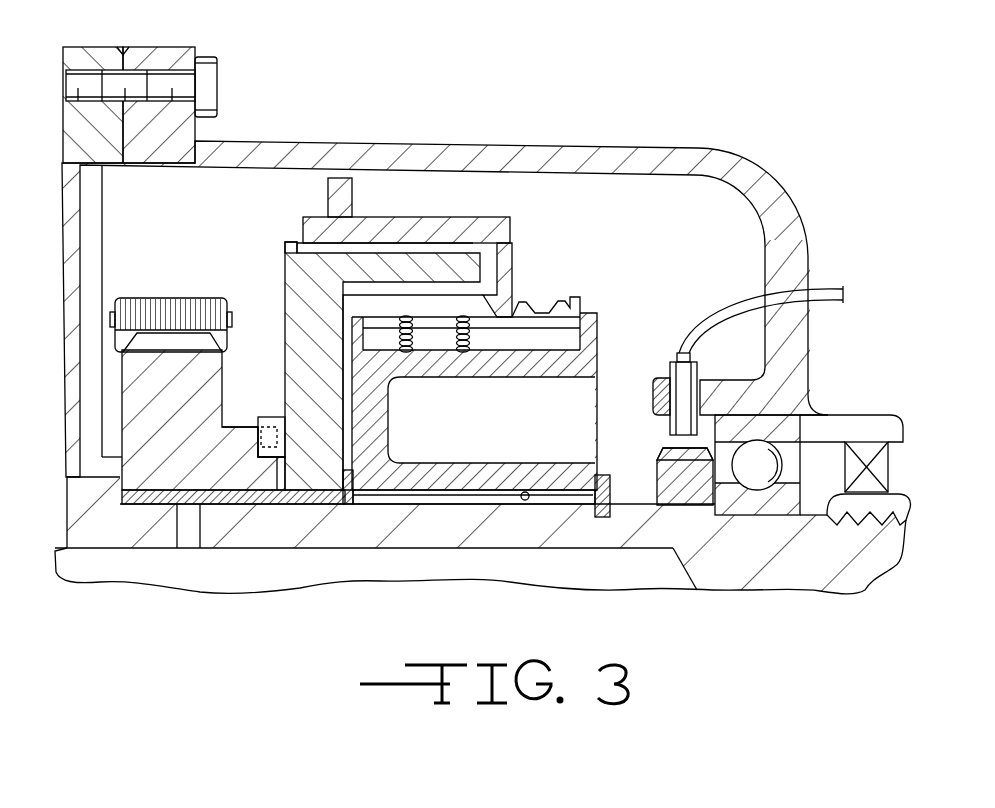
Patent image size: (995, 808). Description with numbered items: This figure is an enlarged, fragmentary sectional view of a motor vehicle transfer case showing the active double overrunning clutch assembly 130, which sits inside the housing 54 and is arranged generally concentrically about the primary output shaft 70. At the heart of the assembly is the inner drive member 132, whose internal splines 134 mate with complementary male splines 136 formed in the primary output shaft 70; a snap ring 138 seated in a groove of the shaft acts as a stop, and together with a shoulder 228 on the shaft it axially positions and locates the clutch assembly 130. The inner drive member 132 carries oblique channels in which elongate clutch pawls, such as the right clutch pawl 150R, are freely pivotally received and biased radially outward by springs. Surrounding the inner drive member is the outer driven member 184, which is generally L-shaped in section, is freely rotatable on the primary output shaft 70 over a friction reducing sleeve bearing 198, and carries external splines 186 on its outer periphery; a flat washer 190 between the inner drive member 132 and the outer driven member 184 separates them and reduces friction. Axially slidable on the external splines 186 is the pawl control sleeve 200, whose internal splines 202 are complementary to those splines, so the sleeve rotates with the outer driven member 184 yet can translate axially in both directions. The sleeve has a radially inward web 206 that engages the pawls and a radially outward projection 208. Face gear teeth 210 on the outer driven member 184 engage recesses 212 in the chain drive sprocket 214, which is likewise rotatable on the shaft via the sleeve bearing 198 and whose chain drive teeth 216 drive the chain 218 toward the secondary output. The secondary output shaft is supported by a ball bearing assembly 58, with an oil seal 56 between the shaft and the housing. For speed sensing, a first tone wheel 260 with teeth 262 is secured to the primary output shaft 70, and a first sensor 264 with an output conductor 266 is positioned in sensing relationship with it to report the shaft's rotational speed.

The active double overrunning clutch assembly 130 is at (623, 118).
The housing 54 is at (298, 158).
The internal splines 202 is at (320, 243).
The projection 208 is at (352, 197).
The pawl control sleeve 200 is at (445, 232).
The web 206 is at (513, 268).
The chain 218 is at (182, 298).
The external splines 186 is at (300, 245).
The outer driven member 184 is at (286, 277).
The chain drive teeth 216 is at (150, 340).
The right elongate clutch pawl 150R is at (580, 293).
The first sensor 264 is at (684, 383).
The output conductor 266 is at (822, 287).
The ball bearing assembly 58 is at (763, 445).
The oil seal 56 is at (860, 448).
The inner drive member 132 is at (367, 400).
The teeth 262 is at (660, 447).
The first tone wheel 260 is at (667, 483).
The face gear teeth 210 is at (258, 418).
The chain drive sprocket 214 is at (192, 397).
The recesses 212 is at (256, 443).
The shoulder 228 is at (112, 483).
The sleeve bearing 198 is at (232, 504).
The flat washer 190 is at (343, 472).
The internal splines 134 is at (440, 494).
The male splines 136 is at (527, 502).
The snap ring 138 is at (605, 518).
The primary output shaft 70 is at (773, 567).